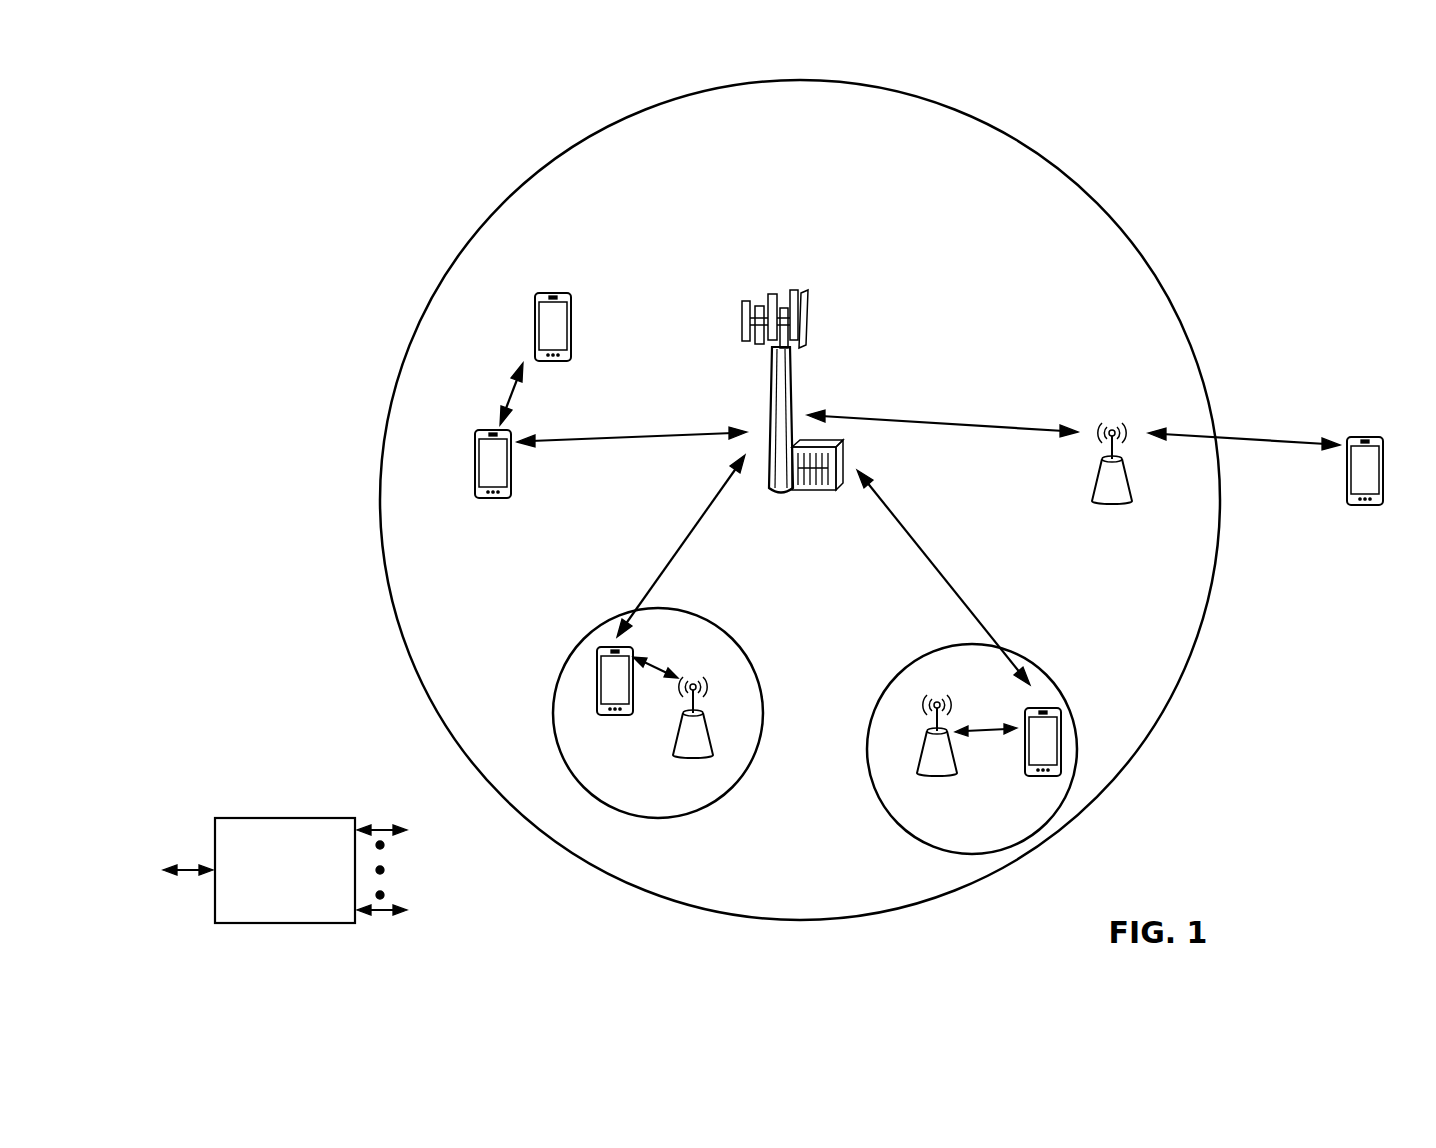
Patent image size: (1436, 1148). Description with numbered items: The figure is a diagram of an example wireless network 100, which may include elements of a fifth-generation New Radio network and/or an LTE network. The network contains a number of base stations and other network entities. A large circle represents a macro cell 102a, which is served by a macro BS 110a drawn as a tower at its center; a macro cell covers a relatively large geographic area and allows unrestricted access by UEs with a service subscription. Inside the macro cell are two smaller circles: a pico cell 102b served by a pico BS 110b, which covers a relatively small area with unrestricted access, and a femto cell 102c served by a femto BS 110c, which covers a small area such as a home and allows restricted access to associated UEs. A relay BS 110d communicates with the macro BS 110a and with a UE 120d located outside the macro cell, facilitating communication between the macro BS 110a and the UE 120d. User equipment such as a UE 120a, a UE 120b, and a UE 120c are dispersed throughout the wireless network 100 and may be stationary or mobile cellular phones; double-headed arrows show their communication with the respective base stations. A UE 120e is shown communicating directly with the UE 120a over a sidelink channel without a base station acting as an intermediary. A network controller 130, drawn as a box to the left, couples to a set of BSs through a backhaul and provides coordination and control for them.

The wireless network 100 is at (262, 75).
The macro cell 102a is at (1078, 193).
The pico cell 102b is at (747, 655).
The femto cell 102c is at (906, 664).
The macro BS 110a is at (786, 288).
The pico BS 110b is at (714, 740).
The femto BS 110c is at (922, 752).
The relay BS 110d is at (1113, 426).
The UE 120a is at (474, 465).
The UE 120b is at (600, 716).
The UE 120c is at (1027, 777).
The UE 120d is at (1381, 436).
The UE 120e is at (533, 316).
The network controller 130 is at (284, 817).